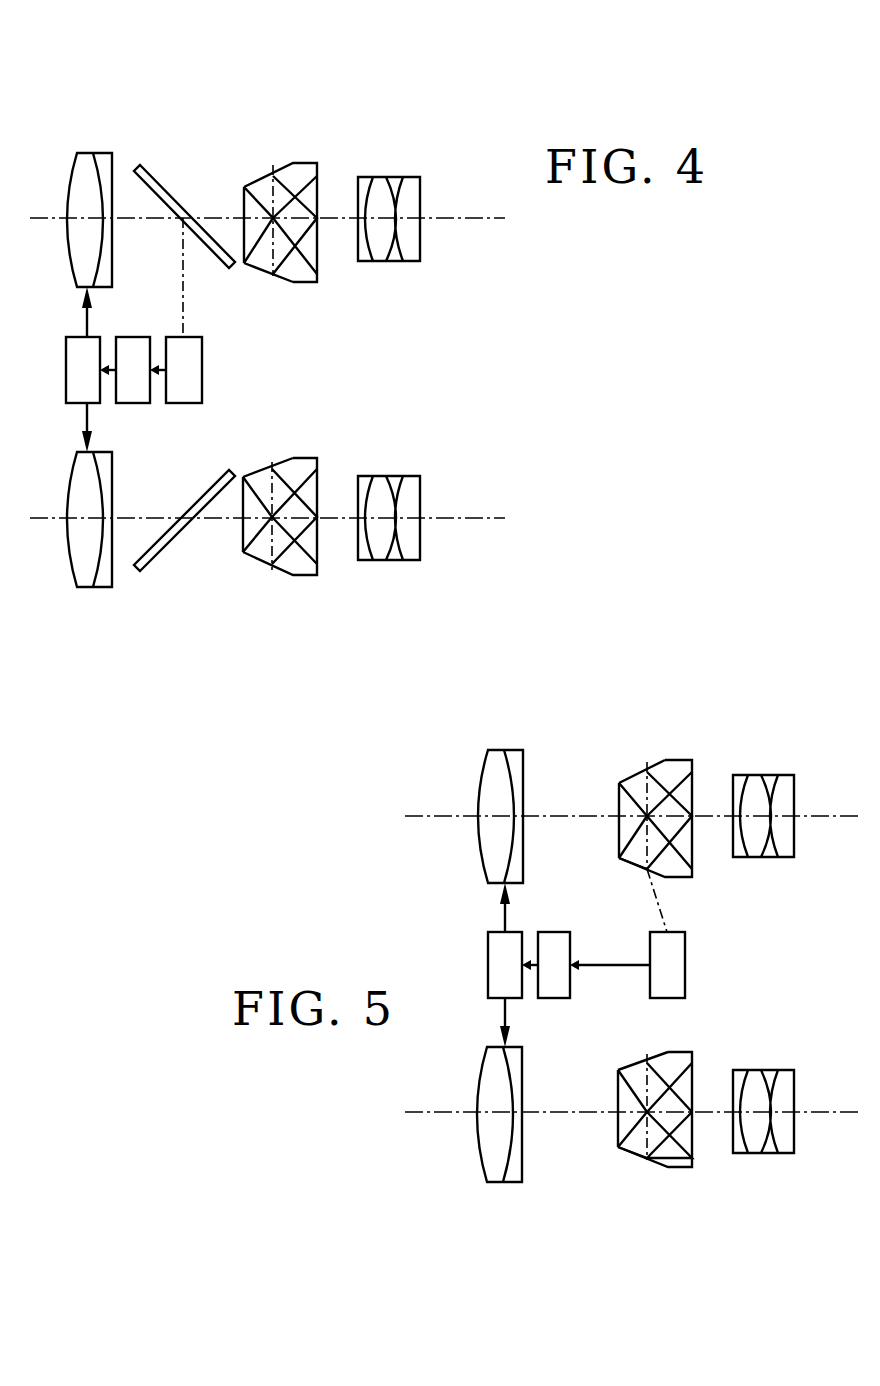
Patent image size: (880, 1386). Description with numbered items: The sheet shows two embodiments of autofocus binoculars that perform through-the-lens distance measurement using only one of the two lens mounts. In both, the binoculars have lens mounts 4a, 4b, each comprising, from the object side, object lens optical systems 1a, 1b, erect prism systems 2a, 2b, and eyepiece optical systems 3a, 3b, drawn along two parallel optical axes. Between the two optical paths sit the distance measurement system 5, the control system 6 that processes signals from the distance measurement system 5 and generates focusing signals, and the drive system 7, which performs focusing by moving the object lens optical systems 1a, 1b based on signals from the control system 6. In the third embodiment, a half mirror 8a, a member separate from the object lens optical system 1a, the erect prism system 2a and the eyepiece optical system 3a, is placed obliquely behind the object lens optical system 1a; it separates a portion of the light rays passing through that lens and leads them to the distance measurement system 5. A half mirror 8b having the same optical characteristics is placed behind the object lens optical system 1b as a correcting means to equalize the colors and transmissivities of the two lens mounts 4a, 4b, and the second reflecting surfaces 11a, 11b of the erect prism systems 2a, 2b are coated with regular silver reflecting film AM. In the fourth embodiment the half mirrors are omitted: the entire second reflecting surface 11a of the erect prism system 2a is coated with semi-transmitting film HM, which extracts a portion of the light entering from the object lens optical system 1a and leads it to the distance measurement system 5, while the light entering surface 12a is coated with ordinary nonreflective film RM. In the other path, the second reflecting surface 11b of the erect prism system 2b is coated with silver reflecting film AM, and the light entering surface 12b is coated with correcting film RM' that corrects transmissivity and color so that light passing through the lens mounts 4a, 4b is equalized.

In FIG. 4, the object lens optical system 1a is at (57, 138).
In FIG. 5, the object lens optical system 1a is at (468, 735).
In FIG. 4, the object lens optical system 1b is at (55, 602).
In FIG. 5, the object lens optical system 1b is at (467, 1197).
In FIG. 4, the erect prism system 2a is at (238, 135).
In FIG. 5, the erect prism system 2a is at (703, 735).
In FIG. 4, the erect prism system 2b is at (237, 600).
In FIG. 5, the erect prism system 2b is at (612, 1195).
In FIG. 4, the eyepiece optical system 3a is at (348, 135).
In FIG. 5, the eyepiece optical system 3a is at (723, 735).
In FIG. 4, the eyepiece optical system 3b is at (347, 600).
In FIG. 5, the eyepiece optical system 3b is at (722, 1195).
In FIG. 4, the lens mount 4a is at (435, 62).
In FIG. 5, the lens mount 4a is at (812, 660).
In FIG. 4, the lens mount 4b is at (435, 675).
In FIG. 5, the lens mount 4b is at (812, 1268).
In FIG. 4, the distance measurement system 5 is at (176, 370).
In FIG. 5, the distance measurement system 5 is at (627, 965).
In FIG. 4, the control system 6 is at (125, 370).
In FIG. 5, the control system 6 is at (546, 965).
In FIG. 4, the drive system 7 is at (83, 369).
In FIG. 5, the drive system 7 is at (505, 965).
In FIG. 4, the half mirror 8a is at (170, 188).
In FIG. 4, the half mirror 8b is at (180, 537).
In FIG. 4, the second reflecting surface 11a is at (245, 265).
In FIG. 5, the second reflecting surface 11a is at (624, 862).
In FIG. 4, the second reflecting surface 11b is at (255, 472).
In FIG. 5, the second reflecting surface 11b is at (632, 1066).
In FIG. 5, the light entering surface 12a is at (617, 803).
In FIG. 5, the light entering surface 12b is at (617, 1125).
In FIG. 4, the silver reflecting film AM is at (262, 272).
In FIG. 5, the silver reflecting film AM is at (640, 1062).
In FIG. 5, the nonreflective film RM is at (583, 818).
In FIG. 5, the correcting film RM' is at (581, 1110).
In FIG. 5, the semi-transmitting film HM is at (643, 868).